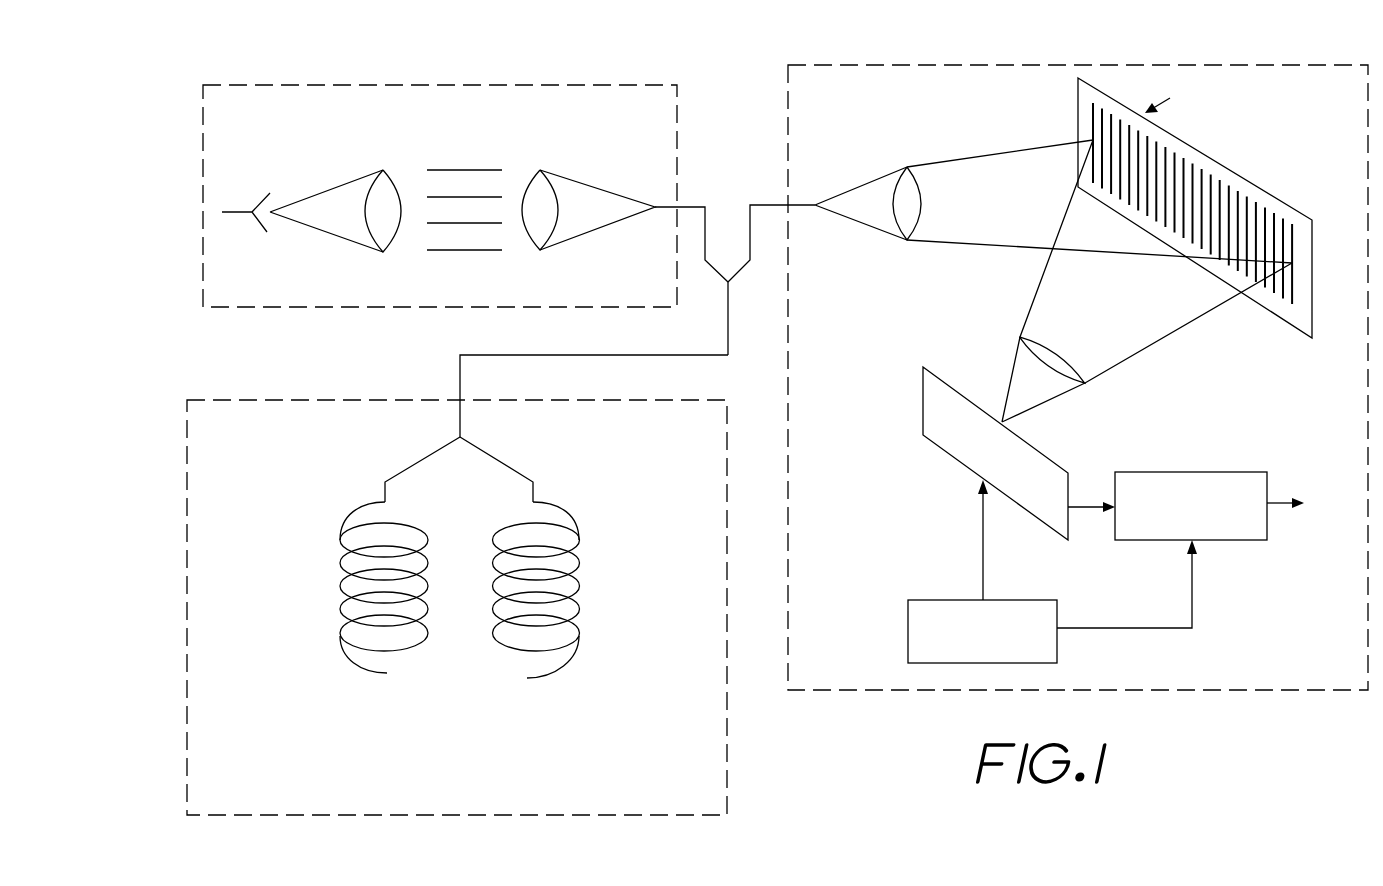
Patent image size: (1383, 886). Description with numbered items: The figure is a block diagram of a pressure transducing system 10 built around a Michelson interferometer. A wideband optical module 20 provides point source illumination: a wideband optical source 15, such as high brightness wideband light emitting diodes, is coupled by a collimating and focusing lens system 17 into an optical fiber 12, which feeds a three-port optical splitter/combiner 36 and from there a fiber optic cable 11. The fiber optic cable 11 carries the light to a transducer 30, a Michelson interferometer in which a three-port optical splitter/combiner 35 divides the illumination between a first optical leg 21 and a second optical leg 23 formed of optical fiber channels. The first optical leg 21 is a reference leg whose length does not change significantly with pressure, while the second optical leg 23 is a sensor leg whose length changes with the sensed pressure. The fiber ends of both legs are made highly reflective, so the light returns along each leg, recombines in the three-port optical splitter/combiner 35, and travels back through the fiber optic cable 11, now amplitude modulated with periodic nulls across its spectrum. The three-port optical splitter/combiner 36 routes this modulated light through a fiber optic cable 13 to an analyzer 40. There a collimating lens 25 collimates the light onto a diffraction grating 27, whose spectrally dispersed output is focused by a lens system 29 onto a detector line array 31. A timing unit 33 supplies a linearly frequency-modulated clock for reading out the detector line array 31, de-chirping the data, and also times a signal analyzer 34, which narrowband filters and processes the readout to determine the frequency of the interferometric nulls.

The pressure transducing system 10 is at (1270, 734).
The fiber optic cable 11 is at (600, 350).
The optical fiber 12 is at (703, 262).
The fiber optic cable 13 is at (760, 242).
The wideband optical source 15 is at (250, 222).
The collimating and focusing lens system 17 is at (370, 259).
The wideband optical module 20 is at (677, 118).
The first optical leg 21 is at (415, 528).
The second optical leg 23 is at (560, 508).
The collimating lens 25 is at (922, 205).
The diffraction grating 27 is at (1256, 190).
The lens system 29 is at (1068, 356).
The transducer 30 is at (727, 760).
The detector line array 31 is at (1044, 458).
The timing unit 33 is at (1040, 600).
The signal analyzer 34 is at (1252, 472).
The three-port optical splitter/combiner 35 is at (462, 437).
The three-port optical splitter/combiner 36 is at (737, 288).
The analyzer 40 is at (788, 93).